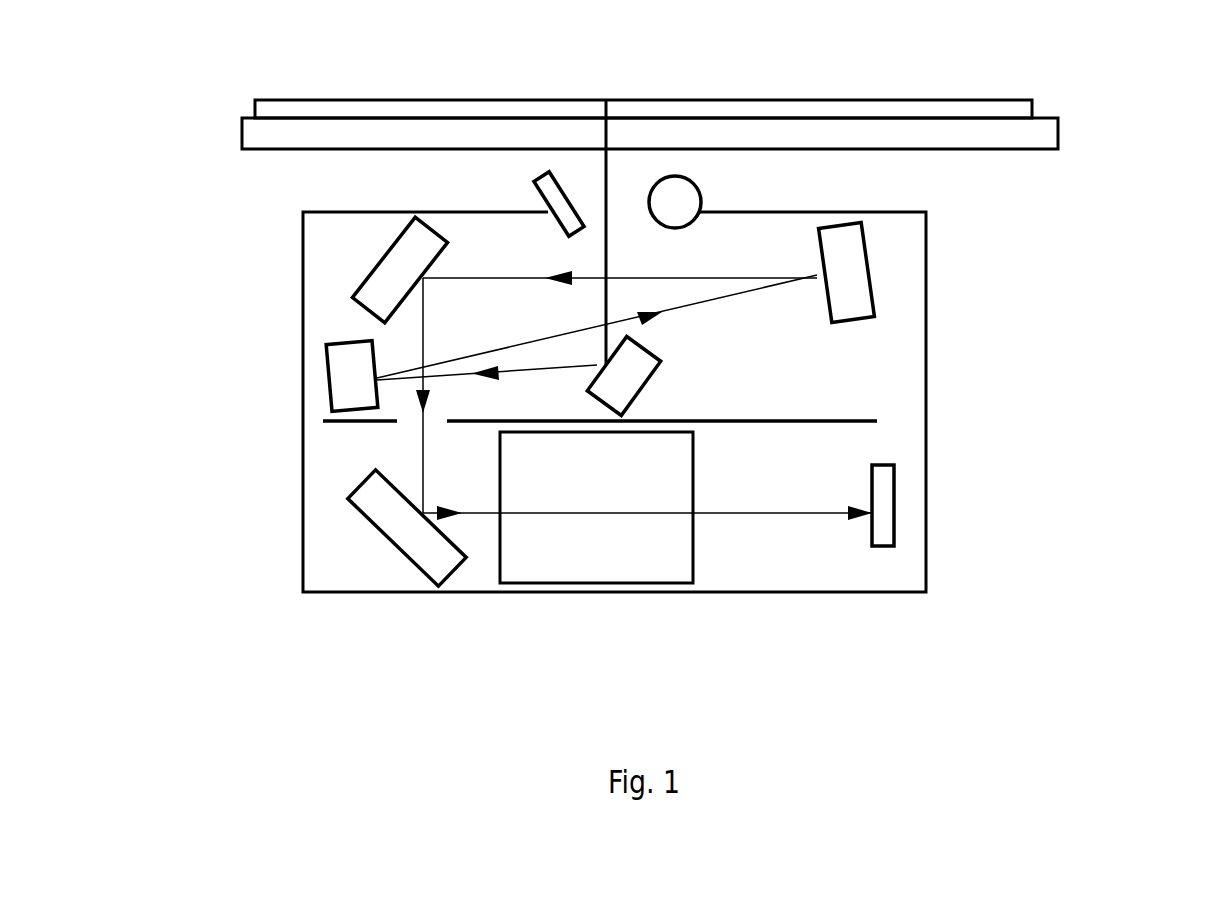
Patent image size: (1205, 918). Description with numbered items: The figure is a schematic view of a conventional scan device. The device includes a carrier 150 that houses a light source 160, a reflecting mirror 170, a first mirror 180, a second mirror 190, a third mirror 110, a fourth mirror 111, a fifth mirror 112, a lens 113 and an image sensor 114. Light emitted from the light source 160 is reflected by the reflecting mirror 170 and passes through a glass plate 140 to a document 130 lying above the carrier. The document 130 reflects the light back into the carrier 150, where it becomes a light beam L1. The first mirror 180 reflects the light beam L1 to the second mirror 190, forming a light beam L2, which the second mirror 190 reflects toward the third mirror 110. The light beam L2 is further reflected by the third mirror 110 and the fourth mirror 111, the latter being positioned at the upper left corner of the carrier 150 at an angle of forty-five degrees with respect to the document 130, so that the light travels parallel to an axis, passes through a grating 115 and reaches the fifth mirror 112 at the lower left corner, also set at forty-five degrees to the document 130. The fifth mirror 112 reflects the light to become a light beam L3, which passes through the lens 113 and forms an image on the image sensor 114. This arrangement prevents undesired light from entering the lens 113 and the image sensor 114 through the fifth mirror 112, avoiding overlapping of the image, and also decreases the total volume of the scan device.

The third mirror 110 is at (855, 283).
The fourth mirror 111 is at (392, 270).
The fifth mirror 112 is at (388, 515).
The lens 113 is at (645, 552).
The image sensor 114 is at (883, 487).
The grating 115 is at (335, 420).
The document 130 is at (783, 108).
The glass plate 140 is at (1017, 137).
The carrier 150 is at (926, 569).
The light source 160 is at (683, 202).
The reflecting mirror 170 is at (553, 199).
The first mirror 180 is at (620, 382).
The second mirror 190 is at (333, 367).
The light beam L1 is at (606, 248).
The light beam L2 is at (572, 367).
The light beam L3 is at (492, 512).